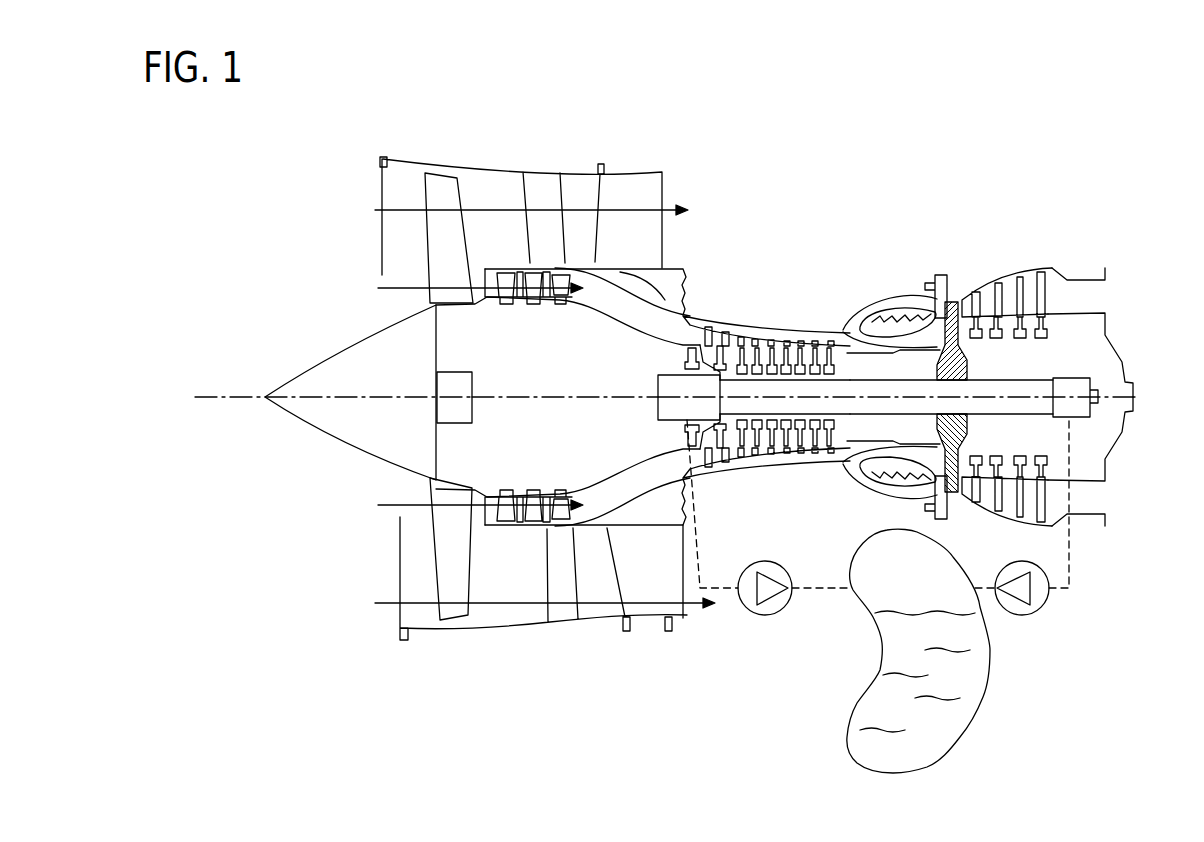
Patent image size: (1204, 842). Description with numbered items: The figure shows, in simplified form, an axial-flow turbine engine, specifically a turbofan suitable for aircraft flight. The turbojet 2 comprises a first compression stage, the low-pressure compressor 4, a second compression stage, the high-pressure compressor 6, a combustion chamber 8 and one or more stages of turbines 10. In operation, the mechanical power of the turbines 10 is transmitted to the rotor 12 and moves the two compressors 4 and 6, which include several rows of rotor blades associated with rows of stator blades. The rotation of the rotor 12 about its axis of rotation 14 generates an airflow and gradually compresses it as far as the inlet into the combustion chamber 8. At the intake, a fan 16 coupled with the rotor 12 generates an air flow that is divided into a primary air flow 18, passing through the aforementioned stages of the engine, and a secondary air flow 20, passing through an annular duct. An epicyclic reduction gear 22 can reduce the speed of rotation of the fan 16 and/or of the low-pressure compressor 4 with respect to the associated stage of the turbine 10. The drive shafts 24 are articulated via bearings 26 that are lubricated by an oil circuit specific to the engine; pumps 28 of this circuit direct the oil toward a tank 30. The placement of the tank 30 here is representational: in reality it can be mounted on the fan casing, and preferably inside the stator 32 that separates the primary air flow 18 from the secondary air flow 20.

The turbojet 2 is at (833, 145).
The low-pressure compressor 4 is at (503, 303).
The high-pressure compressor 6 is at (742, 316).
The combustion chamber 8 is at (903, 318).
The turbines 10 is at (1028, 288).
The rotor 12 is at (978, 382).
The axis of rotation 14 is at (566, 392).
The fan 16 is at (443, 237).
The primary air flow 18 is at (463, 394).
The secondary air flow 20 is at (525, 403).
The epicyclic reduction gear 22 is at (460, 412).
The drive shafts 24 is at (840, 393).
The bearings 26 is at (660, 412).
The pumps 28 is at (748, 608).
The tank 30 is at (955, 715).
The stator 32 is at (645, 288).